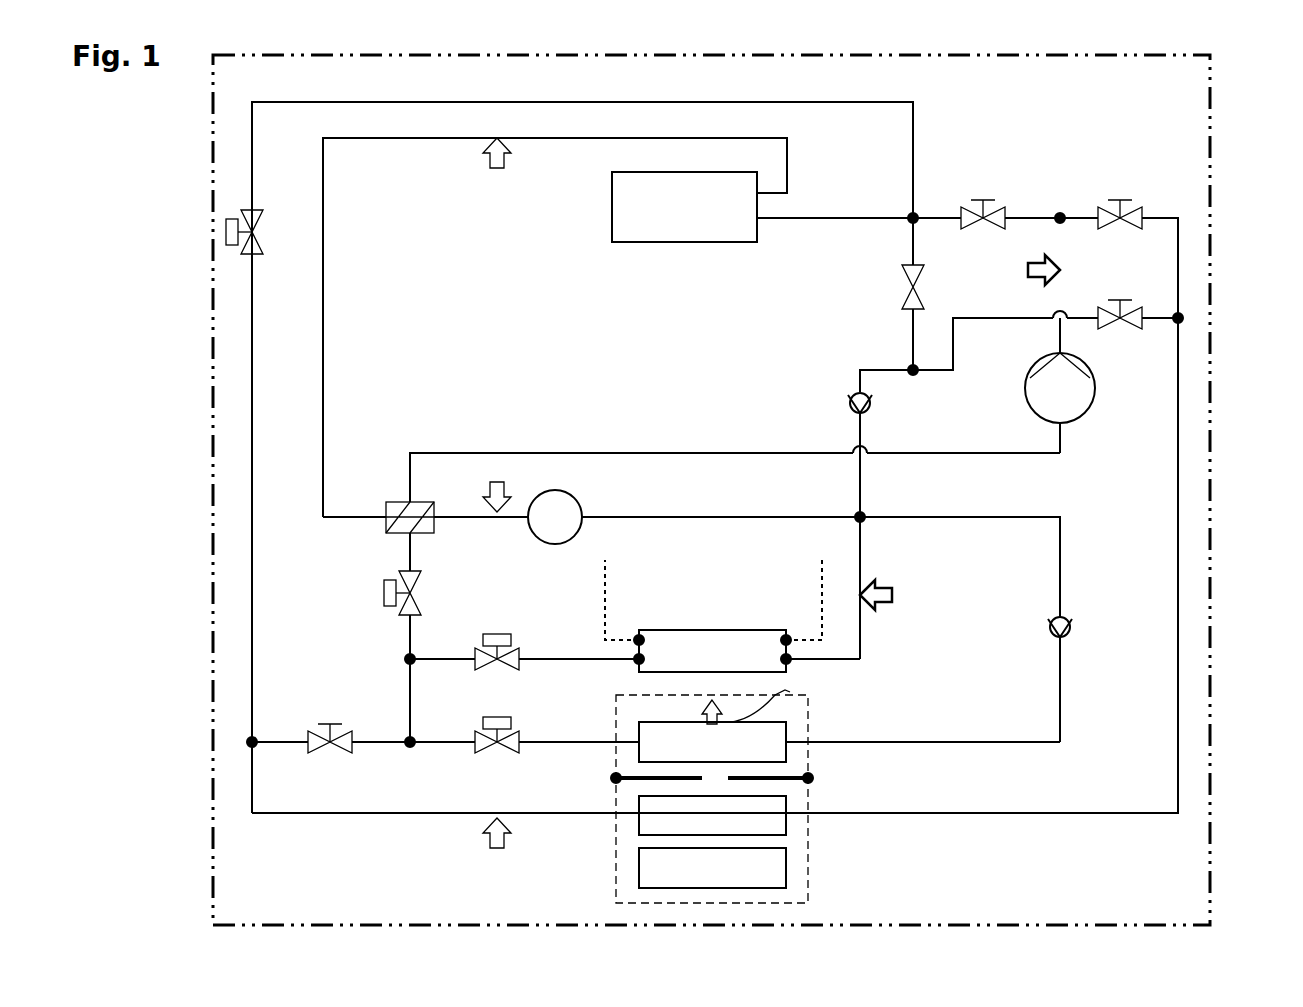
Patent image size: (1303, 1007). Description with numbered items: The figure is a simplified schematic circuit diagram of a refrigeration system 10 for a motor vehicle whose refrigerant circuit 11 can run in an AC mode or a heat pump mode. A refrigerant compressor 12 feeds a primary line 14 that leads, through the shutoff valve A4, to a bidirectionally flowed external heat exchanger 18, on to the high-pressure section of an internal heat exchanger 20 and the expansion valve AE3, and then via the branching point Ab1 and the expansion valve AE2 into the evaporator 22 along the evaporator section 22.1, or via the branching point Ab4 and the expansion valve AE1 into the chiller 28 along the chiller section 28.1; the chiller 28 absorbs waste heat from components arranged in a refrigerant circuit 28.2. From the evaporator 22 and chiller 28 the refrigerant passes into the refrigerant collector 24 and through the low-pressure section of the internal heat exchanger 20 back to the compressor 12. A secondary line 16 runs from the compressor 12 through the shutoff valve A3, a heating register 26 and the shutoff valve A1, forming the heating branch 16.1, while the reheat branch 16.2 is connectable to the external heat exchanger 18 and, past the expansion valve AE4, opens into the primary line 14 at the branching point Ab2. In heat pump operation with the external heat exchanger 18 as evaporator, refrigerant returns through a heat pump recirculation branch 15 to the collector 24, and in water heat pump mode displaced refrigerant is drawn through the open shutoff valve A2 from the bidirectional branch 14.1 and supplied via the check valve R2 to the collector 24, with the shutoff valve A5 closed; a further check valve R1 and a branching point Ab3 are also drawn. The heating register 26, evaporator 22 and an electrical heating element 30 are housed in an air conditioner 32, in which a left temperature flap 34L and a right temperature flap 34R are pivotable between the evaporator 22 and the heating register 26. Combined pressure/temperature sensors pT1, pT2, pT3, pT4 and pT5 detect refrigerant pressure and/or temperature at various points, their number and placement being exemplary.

The refrigeration system 10 is at (1212, 198).
The refrigerant circuit 11 is at (681, 450).
The refrigerant compressor 12 is at (1060, 385).
The primary line 14 is at (800, 222).
The bidirectional branch 14.1 is at (454, 140).
The heat pump recirculation branch 15 is at (911, 338).
The secondary line 16 is at (1182, 260).
The heating branch 16.1 is at (1182, 616).
The reheat branch 16.2 is at (250, 617).
The external heat exchanger 18 is at (684, 207).
The internal heat exchanger 20 is at (392, 502).
The evaporator 22 is at (849, 726).
The evaporator section 22.1 is at (545, 740).
The refrigerant collector 24 is at (591, 517).
The heating register 26 is at (712, 815).
The chiller 28 is at (747, 651).
The chiller section 28.1 is at (551, 658).
The refrigerant circuit 28.2 is at (608, 584).
The electrical heating element 30 is at (712, 868).
The air conditioner 32 is at (810, 858).
The left temperature flap 34L is at (612, 778).
The right temperature flap 34R is at (812, 778).
The shutoff valve A1 is at (330, 724).
The shutoff valve A2 is at (901, 287).
The shutoff valve A3 is at (1120, 198).
The shutoff valve A4 is at (984, 198).
The shutoff valve A5 is at (1120, 300).
The expansion valve AE1 is at (497, 634).
The expansion valve AE2 is at (497, 750).
The expansion valve AE3 is at (383, 593).
The expansion valve AE4 is at (225, 232).
The branching point Ab1 is at (410, 748).
The branching point Ab2 is at (908, 213).
The branching point Ab3 is at (913, 377).
The branching point Ab4 is at (407, 657).
The check valve R1 is at (1072, 625).
The check valve R2 is at (850, 403).
The pressure/temperature sensor pT1 is at (1028, 270).
The pressure/temperature sensor pT2 is at (497, 480).
The pressure/temperature sensor pT3 is at (497, 170).
The pressure/temperature sensor pT4 is at (497, 850).
The pressure/temperature sensor pT5 is at (892, 595).